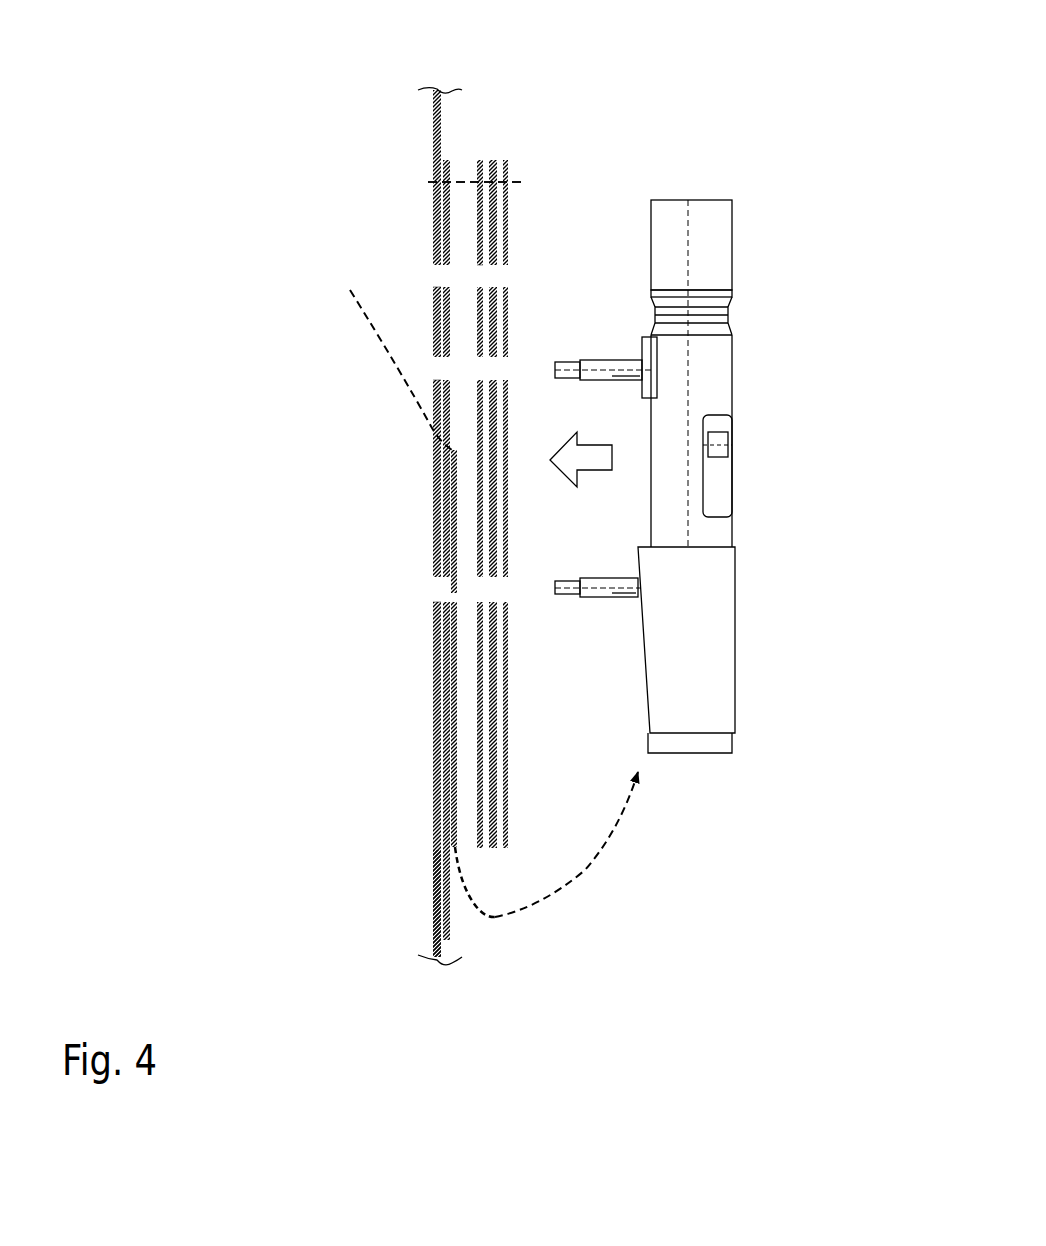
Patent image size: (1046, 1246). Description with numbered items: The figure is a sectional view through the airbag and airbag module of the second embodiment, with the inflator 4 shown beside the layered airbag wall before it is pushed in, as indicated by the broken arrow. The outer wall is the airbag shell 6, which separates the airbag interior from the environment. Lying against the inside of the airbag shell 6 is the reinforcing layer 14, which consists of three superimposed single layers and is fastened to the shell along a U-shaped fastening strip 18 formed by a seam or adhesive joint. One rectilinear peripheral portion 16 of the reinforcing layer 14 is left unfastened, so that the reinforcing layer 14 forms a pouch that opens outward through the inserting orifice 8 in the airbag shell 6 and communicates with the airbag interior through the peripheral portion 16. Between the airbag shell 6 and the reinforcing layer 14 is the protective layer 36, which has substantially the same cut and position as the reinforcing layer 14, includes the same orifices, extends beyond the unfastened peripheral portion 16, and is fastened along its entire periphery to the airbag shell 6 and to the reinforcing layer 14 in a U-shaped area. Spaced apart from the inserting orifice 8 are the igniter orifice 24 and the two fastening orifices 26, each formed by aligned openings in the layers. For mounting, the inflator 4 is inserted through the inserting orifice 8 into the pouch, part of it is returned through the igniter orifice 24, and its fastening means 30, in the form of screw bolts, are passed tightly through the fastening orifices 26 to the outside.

The inflator 4 is at (713, 668).
The airbag shell 6 is at (433, 658).
The inserting orifice 8 is at (418, 440).
The reinforcing layer 14 is at (478, 150).
The peripheral portion 16 is at (493, 877).
The fastening strip 18 is at (414, 181).
The igniter orifice 24 is at (418, 275).
The fastening orifices 26 is at (418, 368).
The fastening means 30 is at (657, 372).
The protective layer 36 is at (433, 913).